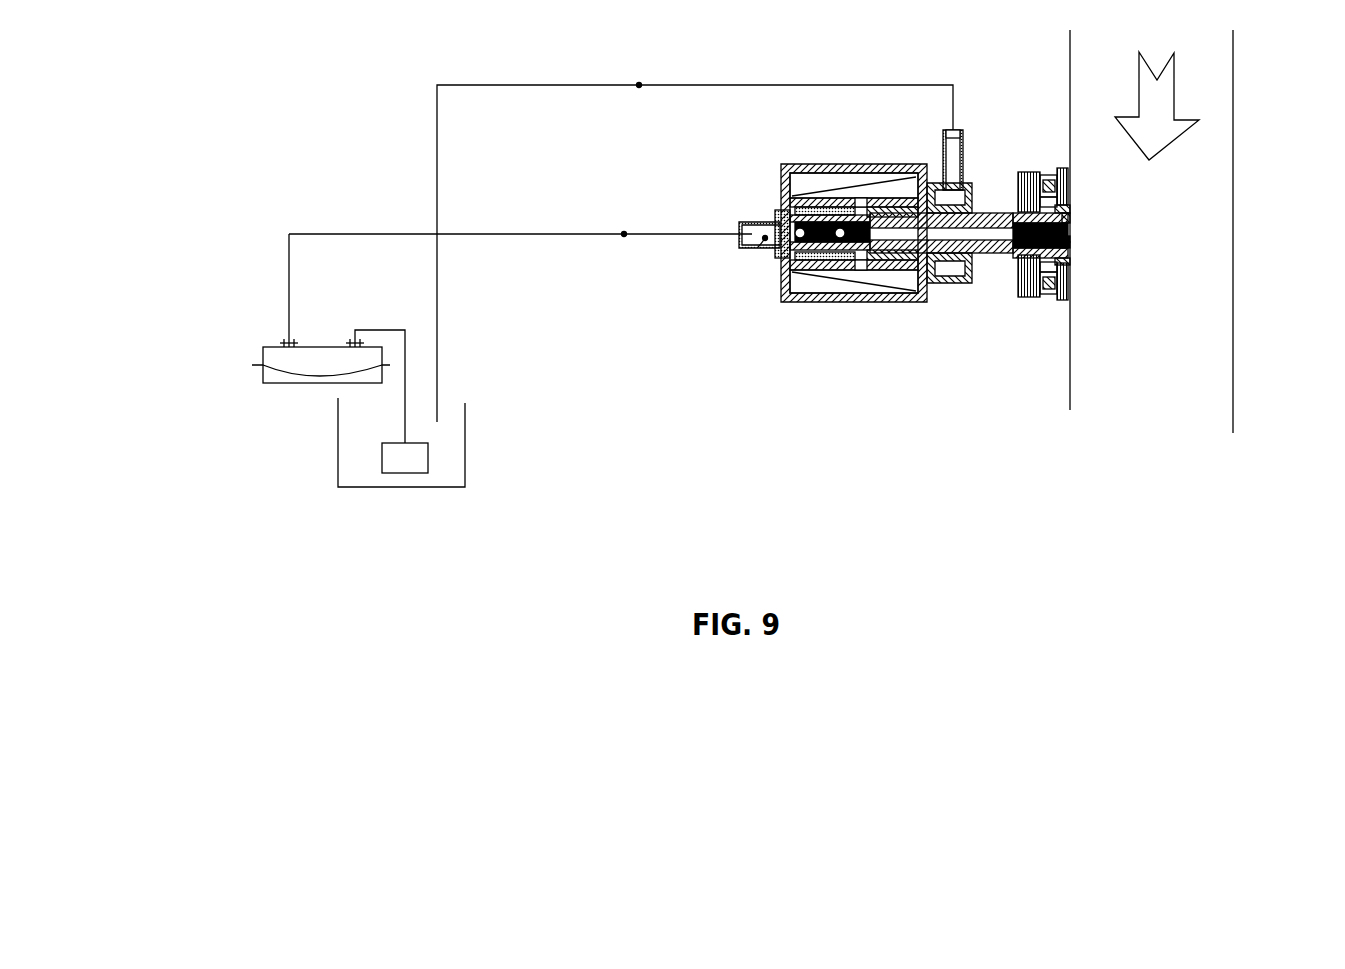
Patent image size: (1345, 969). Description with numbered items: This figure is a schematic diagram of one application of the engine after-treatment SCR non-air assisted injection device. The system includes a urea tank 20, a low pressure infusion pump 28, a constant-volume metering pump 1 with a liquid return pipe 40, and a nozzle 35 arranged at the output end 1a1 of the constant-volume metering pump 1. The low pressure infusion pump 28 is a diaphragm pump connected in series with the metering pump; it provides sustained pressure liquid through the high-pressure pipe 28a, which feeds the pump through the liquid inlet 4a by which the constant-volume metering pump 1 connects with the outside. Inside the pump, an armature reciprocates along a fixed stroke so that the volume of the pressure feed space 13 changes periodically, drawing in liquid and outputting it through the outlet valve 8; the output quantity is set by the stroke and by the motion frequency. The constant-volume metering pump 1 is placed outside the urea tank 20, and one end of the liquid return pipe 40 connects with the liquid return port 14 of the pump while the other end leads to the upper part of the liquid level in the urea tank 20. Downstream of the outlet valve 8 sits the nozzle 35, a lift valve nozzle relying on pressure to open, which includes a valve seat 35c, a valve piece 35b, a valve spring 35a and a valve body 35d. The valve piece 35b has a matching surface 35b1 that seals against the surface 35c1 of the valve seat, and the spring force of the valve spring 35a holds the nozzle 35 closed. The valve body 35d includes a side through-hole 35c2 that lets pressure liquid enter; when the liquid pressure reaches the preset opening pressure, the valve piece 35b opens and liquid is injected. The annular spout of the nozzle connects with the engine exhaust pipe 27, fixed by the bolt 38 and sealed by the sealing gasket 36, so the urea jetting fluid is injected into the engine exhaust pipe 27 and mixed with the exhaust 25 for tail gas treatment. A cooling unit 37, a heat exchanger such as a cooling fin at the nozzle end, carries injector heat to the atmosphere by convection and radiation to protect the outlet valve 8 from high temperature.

The constant-volume metering pump 1 is at (762, 188).
The output end 1a1 is at (983, 253).
The liquid inlet 4a is at (765, 240).
The outlet valve 8 is at (843, 265).
The pressure feed space 13 is at (905, 267).
The liquid return port 14 is at (945, 170).
The urea tank 20 is at (320, 455).
The exhaust 25 is at (1175, 85).
The engine exhaust pipe 27 is at (1233, 185).
The low pressure infusion pump 28 is at (263, 332).
The high-pressure pipe 28a is at (624, 234).
The nozzle 35 is at (1070, 236).
The valve spring 35a is at (1020, 300).
The valve piece 35b is at (1050, 300).
The matching surface 35b1 is at (1070, 240).
The valve seat 35c is at (1062, 207).
The surface of the valve seat 35c1 is at (1068, 222).
The side through-hole 35c2 is at (953, 118).
The valve body 35d is at (1070, 245).
The sealing gasket 36 is at (1065, 252).
The cooling unit 37 is at (1015, 212).
The bolt 38 is at (1055, 178).
The liquid return pipe 40 is at (639, 85).